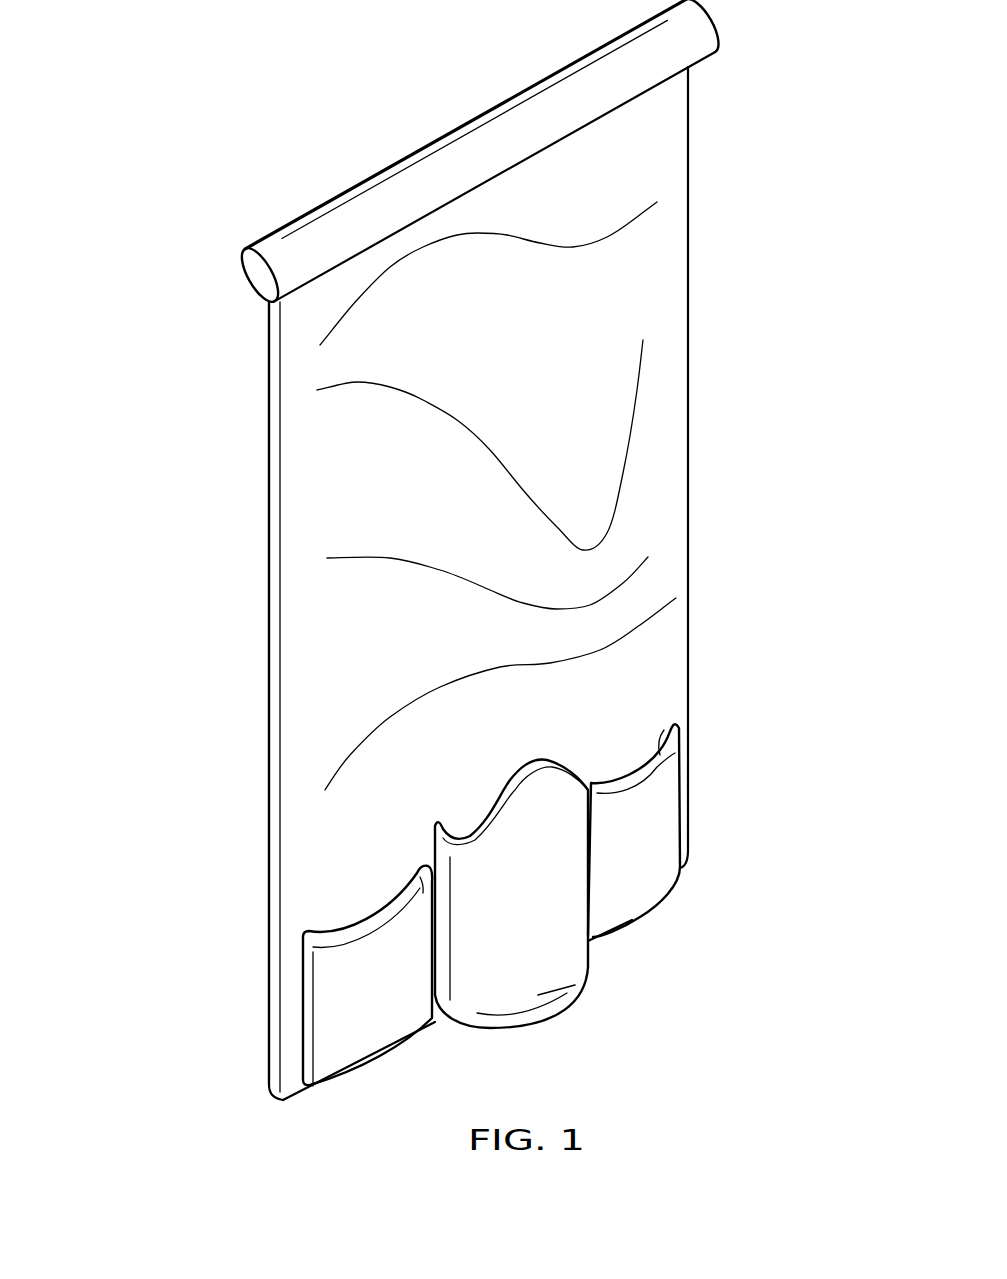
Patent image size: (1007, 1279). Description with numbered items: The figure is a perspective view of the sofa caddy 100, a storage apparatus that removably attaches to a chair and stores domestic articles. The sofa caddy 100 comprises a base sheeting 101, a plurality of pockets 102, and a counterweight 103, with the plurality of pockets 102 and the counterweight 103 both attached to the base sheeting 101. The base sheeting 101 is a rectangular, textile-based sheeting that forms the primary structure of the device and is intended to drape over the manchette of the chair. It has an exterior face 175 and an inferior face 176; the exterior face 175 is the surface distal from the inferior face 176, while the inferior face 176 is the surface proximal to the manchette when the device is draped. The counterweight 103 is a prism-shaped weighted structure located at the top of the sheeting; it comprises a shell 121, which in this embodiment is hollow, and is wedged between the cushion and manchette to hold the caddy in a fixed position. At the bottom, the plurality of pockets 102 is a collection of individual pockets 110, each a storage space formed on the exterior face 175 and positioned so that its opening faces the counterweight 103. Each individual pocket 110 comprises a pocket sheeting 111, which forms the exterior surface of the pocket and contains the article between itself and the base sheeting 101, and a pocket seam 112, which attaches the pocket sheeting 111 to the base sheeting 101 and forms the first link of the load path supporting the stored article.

The sofa caddy 100 is at (172, 203).
The base sheeting 101 is at (655, 242).
The plurality of pockets 102 is at (597, 917).
The counterweight 103 is at (492, 100).
The individual pocket 110 is at (358, 930).
The pocket sheeting 111 is at (358, 1047).
The pocket seam 112 is at (303, 990).
The shell 121 is at (700, 27).
The exterior face 175 is at (303, 490).
The inferior face 176 is at (246, 378).